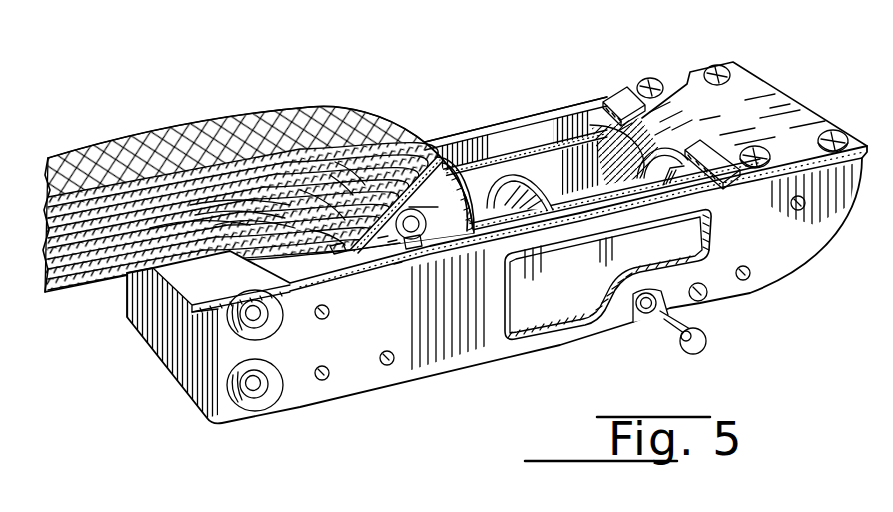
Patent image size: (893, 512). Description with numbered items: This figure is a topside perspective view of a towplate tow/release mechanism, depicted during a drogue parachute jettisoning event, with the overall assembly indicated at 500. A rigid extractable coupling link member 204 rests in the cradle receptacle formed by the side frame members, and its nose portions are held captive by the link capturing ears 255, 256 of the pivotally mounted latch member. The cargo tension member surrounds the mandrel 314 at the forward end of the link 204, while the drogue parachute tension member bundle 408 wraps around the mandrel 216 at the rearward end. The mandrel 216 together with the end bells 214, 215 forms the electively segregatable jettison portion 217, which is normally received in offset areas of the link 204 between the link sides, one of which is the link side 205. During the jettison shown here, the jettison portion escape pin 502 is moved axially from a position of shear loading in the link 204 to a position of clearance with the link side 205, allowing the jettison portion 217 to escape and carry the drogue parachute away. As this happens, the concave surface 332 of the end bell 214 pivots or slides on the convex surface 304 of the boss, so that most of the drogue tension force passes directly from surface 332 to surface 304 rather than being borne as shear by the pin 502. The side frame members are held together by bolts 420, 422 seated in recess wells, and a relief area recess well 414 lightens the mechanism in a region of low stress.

The tension member bundle 408 is at (160, 106).
The mandrel 216 is at (353, 193).
The coupling link member 204 is at (510, 160).
The assembly 500 is at (463, 113).
The mandrel 314 is at (528, 188).
The link capturing ear 255 is at (597, 122).
The link capturing ear 256 is at (677, 172).
The jettison portion 217 is at (410, 205).
The link side 205 is at (410, 235).
The jettison portion escape pin 502 is at (415, 242).
The convex surface 304 is at (330, 250).
The concave surface 332 is at (383, 237).
The end bell 215 is at (392, 240).
The end bell 214 is at (398, 262).
The relief area recess well 414 is at (570, 296).
The bolt 422 is at (240, 337).
The bolt 420 is at (261, 390).